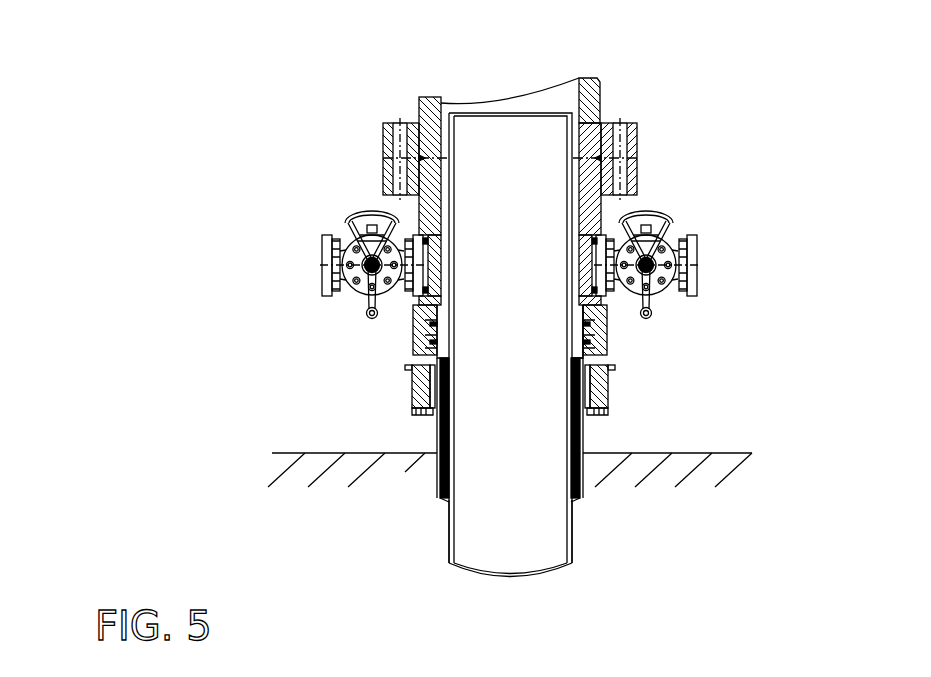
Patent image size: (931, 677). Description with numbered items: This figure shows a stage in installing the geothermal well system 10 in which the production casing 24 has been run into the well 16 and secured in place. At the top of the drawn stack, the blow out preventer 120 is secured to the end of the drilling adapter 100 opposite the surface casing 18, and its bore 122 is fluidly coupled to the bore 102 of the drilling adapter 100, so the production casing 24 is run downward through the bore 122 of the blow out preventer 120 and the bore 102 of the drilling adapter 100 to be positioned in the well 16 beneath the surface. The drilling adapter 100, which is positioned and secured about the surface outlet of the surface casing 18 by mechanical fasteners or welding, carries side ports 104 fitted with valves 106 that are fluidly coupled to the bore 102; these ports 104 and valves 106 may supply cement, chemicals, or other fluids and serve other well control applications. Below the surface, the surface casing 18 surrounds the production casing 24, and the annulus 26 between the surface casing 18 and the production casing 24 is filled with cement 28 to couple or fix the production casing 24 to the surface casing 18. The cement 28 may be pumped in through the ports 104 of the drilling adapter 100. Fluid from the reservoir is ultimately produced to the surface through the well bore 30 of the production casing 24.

The geothermal well system 10 is at (690, 38).
The well 16 is at (388, 391).
The surface casing 18 is at (435, 433).
The production casing 24 is at (570, 533).
The annulus 26 is at (445, 333).
The cement 28 is at (580, 431).
The well bore 30 is at (500, 536).
The drilling adapter 100 is at (608, 327).
The bore 102 is at (572, 193).
The side ports 104 is at (583, 265).
The valves 106 is at (357, 251).
The blow out preventer 120 is at (590, 111).
The bore 122 is at (561, 101).